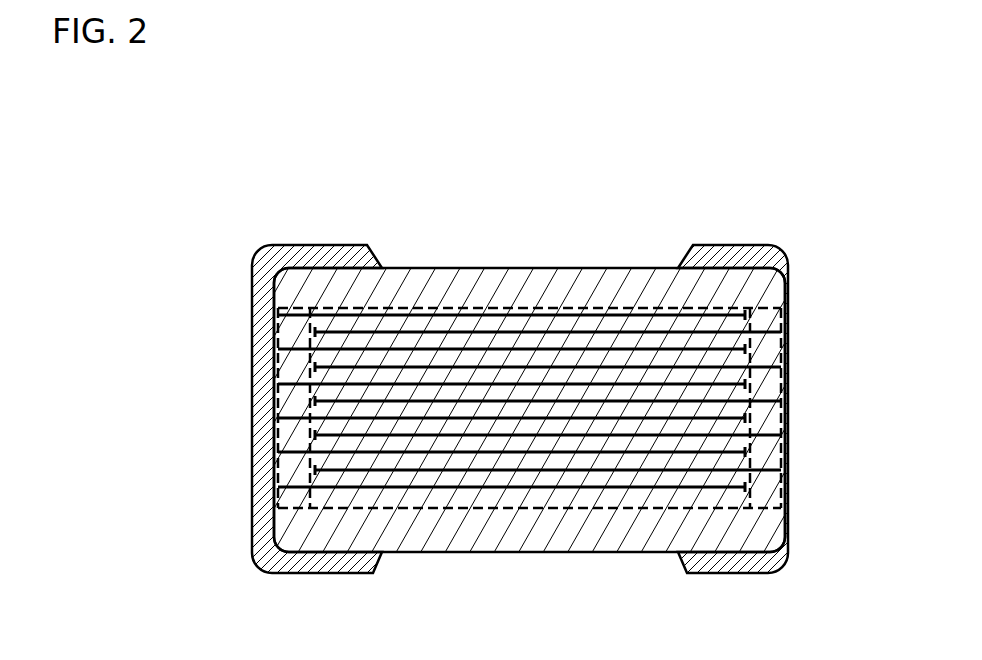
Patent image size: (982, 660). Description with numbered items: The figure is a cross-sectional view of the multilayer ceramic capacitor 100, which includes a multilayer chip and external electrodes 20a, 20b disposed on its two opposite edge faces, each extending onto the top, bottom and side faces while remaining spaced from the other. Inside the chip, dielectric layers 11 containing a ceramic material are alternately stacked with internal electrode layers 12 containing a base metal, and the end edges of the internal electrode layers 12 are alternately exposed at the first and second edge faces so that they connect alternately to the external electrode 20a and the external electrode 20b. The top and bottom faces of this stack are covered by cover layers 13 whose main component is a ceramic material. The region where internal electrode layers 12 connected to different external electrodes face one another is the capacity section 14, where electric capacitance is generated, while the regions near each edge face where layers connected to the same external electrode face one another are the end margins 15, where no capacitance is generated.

The multilayer ceramic capacitor 100 is at (722, 198).
The external electrode 20a is at (273, 245).
The external electrode 20b is at (778, 246).
The dielectric layer 11 is at (631, 476).
The internal electrode layer 12 is at (482, 453).
The cover layer 13 is at (441, 282).
The capacity section 14 is at (549, 308).
The end margin 15 is at (297, 312).